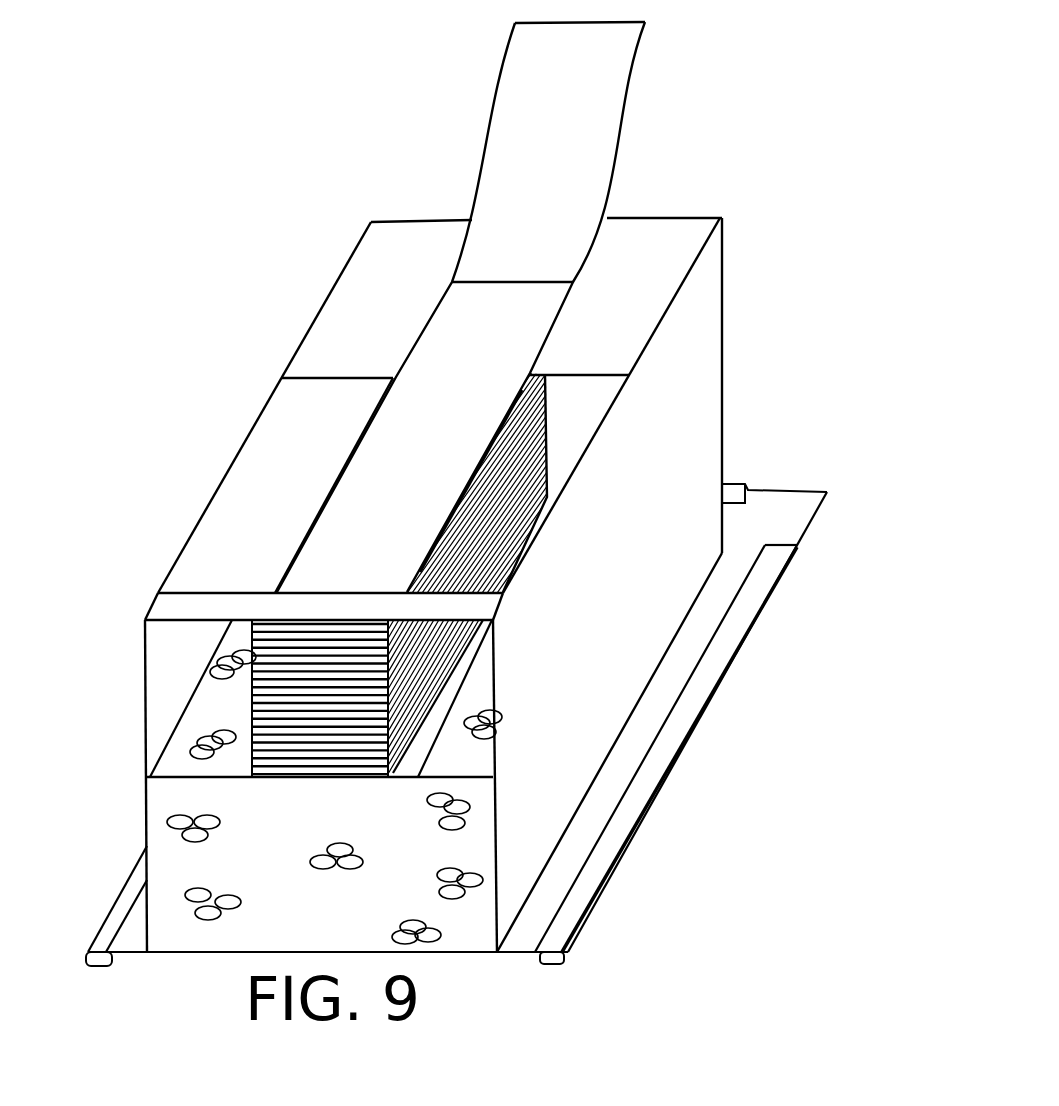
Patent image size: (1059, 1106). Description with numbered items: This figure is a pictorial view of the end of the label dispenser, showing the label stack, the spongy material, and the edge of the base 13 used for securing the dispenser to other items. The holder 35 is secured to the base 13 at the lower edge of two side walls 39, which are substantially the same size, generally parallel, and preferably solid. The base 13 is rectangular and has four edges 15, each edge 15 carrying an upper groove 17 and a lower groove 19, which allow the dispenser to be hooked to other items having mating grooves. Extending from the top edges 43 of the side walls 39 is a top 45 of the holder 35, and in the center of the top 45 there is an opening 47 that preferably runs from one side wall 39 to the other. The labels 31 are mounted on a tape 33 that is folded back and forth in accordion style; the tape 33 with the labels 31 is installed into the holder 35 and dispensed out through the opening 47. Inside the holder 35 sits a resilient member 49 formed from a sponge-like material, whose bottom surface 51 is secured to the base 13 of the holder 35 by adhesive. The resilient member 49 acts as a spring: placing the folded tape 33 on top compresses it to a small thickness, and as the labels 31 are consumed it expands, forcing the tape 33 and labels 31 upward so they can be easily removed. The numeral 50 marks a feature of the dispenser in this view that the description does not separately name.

The base 13 is at (807, 495).
The edges 15 is at (128, 932).
The upper groove 17 is at (627, 817).
The lower groove 19 is at (710, 670).
The labels 31 is at (607, 52).
The tape 33 is at (617, 107).
The holder 35 is at (683, 383).
The side walls 39 is at (702, 300).
The top edges 43 is at (722, 240).
The top 45 is at (623, 240).
The opening 47 is at (272, 472).
The resilient member 49 is at (472, 935).
The bottom edge of front wall 50 is at (190, 955).
The bottom surface 51 is at (330, 777).